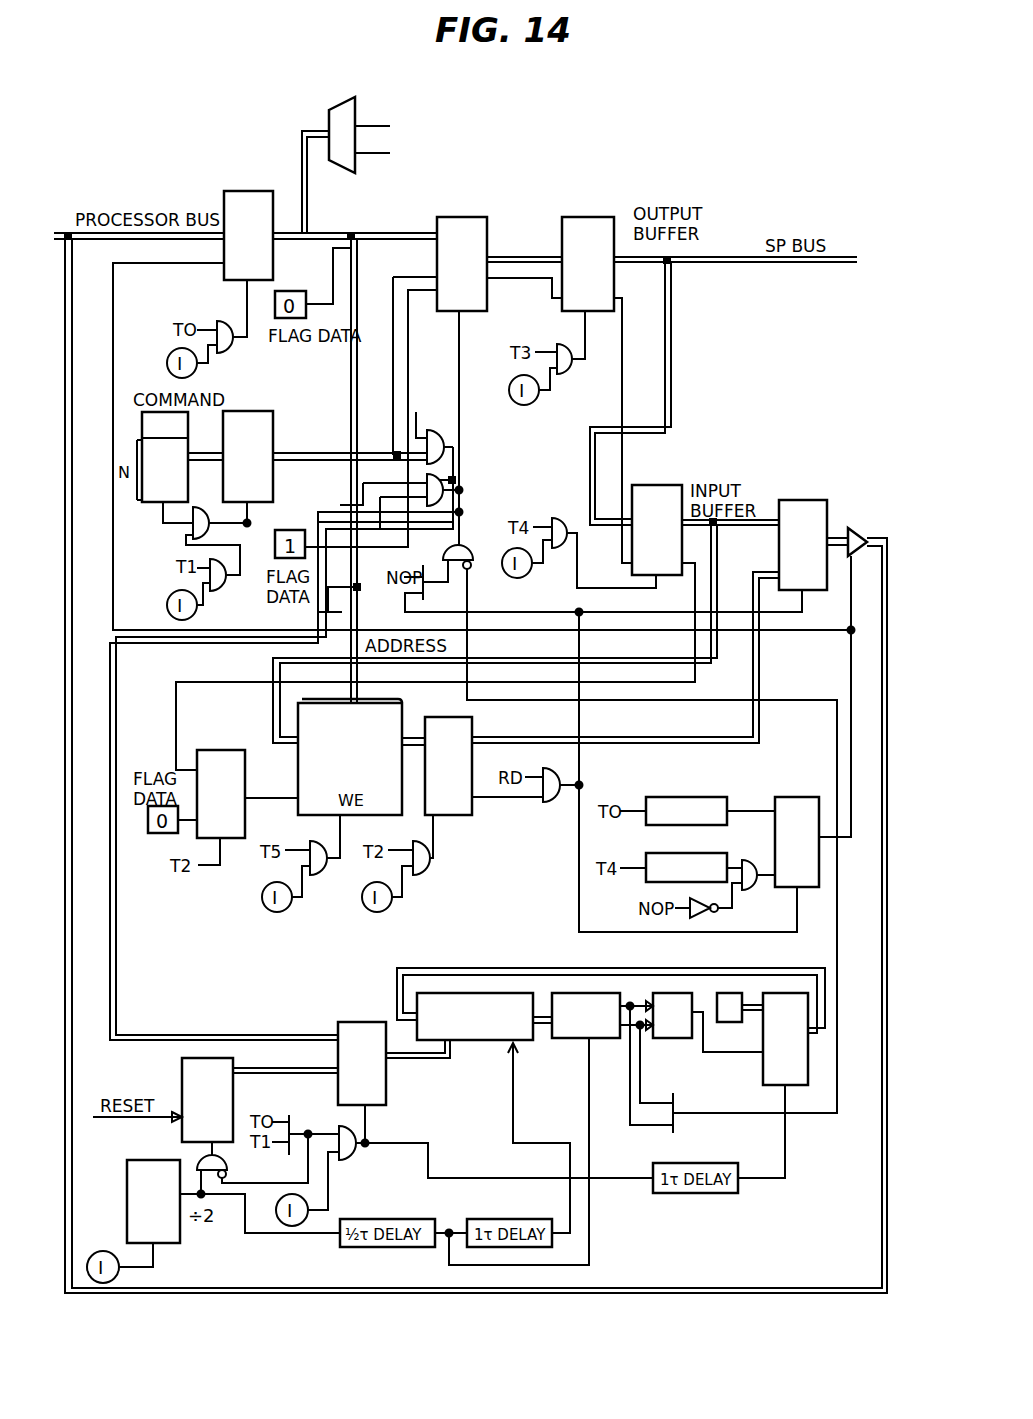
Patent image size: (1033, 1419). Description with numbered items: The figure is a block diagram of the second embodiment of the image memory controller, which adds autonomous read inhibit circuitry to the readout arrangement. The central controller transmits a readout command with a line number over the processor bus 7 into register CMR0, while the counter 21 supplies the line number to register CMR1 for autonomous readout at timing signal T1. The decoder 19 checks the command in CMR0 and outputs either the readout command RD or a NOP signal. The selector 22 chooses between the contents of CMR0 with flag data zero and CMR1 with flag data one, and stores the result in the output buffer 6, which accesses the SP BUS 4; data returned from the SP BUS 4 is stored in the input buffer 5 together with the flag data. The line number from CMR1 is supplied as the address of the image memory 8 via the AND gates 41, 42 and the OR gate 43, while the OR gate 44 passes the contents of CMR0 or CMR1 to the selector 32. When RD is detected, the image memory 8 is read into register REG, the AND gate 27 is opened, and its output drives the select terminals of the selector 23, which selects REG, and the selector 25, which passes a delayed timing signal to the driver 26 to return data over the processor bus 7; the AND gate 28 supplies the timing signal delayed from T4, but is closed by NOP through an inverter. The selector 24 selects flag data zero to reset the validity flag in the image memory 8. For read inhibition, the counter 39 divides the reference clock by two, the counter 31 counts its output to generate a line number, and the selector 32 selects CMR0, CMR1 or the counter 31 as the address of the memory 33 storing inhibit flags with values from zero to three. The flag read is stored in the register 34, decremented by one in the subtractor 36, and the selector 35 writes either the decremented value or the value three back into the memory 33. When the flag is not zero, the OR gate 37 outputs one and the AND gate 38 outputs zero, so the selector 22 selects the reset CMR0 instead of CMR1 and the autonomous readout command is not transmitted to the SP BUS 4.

The SP BUS 4 is at (723, 257).
The input buffer 5 is at (684, 497).
The output buffer 6 is at (614, 228).
The processor bus 7 is at (222, 232).
The image memory 8 is at (395, 815).
The decoder 19 is at (355, 112).
The counter 21 is at (146, 505).
The selector 22 is at (487, 224).
The selector 23 is at (820, 505).
The selector 24 is at (245, 774).
The selector 25 is at (808, 796).
The driver 26 is at (852, 530).
The AND gate 27 is at (562, 782).
The AND gate 28 is at (750, 862).
The counter 31 is at (233, 1100).
The selector 32 is at (362, 1020).
The memory 33 is at (515, 992).
The register 34 is at (605, 992).
The selector 35 is at (795, 992).
The subtractor 36 is at (685, 992).
The OR gate 37 is at (673, 1112).
The AND gate 38 is at (462, 545).
The counter 39 is at (180, 1237).
The AND gate 41 is at (443, 432).
The AND gate 42 is at (433, 514).
The OR gate 43 is at (340, 505).
The OR gate 44 is at (318, 612).